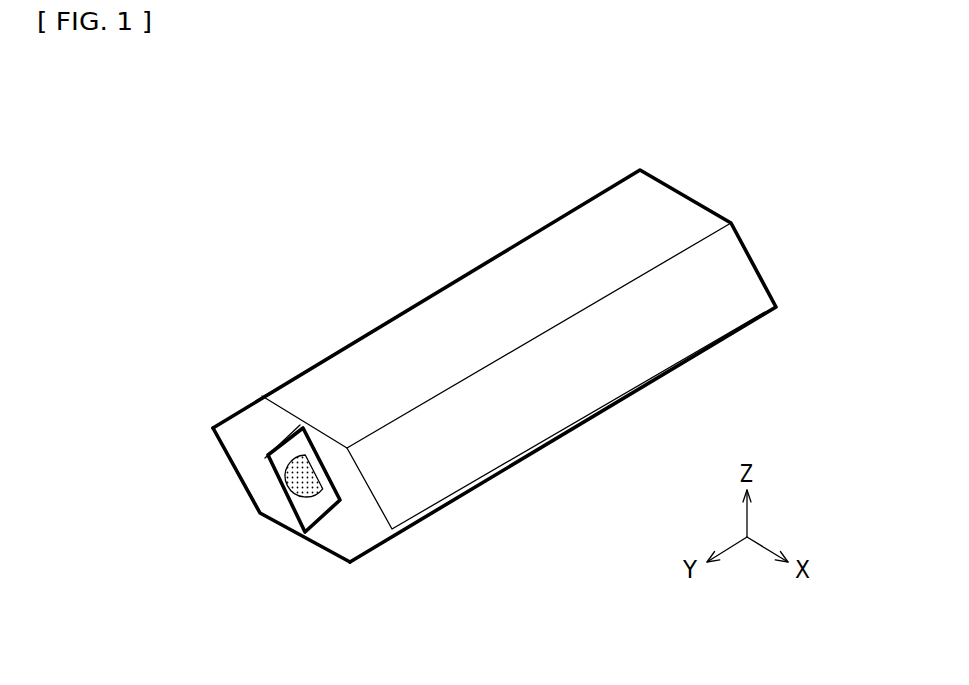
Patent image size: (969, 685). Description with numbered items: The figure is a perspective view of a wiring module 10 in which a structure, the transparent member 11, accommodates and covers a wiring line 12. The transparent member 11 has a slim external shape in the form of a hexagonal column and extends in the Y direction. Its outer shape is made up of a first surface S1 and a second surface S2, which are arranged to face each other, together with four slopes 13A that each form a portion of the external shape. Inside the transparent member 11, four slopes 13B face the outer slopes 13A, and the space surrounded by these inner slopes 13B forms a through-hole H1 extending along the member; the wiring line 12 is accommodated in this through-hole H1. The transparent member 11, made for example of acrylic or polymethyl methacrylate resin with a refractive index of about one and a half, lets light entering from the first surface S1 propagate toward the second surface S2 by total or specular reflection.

The wiring module 10 is at (697, 148).
The transparent member 11 is at (393, 340).
The wiring line 12 is at (327, 487).
The slope 13A is at (440, 460).
The slope 13B is at (293, 500).
The through-hole H1 is at (267, 458).
The first surface S1 is at (290, 535).
The second surface S2 is at (317, 385).